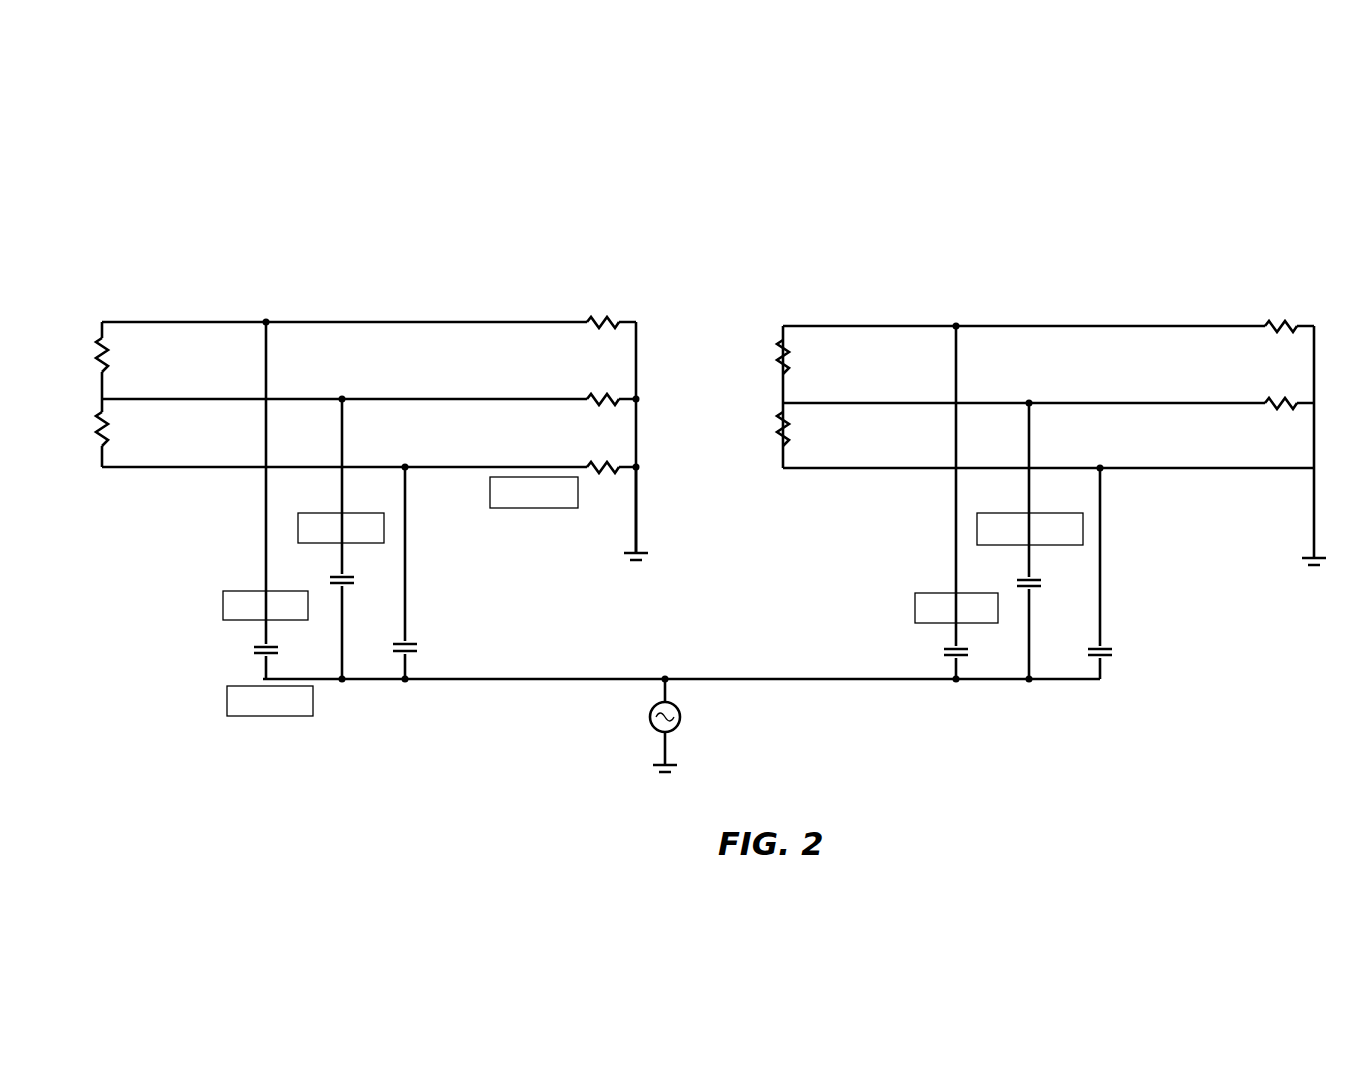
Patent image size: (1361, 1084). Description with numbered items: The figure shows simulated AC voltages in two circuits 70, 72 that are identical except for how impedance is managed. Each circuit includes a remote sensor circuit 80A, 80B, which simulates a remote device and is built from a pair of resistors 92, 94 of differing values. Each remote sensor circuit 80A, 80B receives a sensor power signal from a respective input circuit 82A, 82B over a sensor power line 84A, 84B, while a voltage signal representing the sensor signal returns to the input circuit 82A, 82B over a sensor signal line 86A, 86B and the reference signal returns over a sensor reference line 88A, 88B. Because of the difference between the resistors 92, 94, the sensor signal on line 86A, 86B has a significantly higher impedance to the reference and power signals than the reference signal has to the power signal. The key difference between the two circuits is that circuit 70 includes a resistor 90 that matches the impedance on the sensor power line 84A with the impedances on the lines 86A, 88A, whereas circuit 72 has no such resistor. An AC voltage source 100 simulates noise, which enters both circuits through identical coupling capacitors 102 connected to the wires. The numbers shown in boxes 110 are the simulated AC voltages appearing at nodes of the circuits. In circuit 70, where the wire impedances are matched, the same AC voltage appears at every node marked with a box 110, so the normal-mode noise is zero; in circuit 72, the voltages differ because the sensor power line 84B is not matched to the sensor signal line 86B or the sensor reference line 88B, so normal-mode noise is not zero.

The circuit 70 is at (378, 185).
The circuit 72 is at (1119, 188).
The remote sensor circuit 80A is at (100, 307).
The remote sensor circuit 80B is at (775, 312).
The input circuit 82A is at (608, 252).
The input circuit 82B is at (1285, 253).
The sensor power line 84A is at (184, 468).
The sensor power line 84B is at (1208, 470).
The sensor signal line 86A is at (203, 320).
The sensor signal line 86B is at (1033, 325).
The sensor reference line 88A is at (204, 401).
The sensor reference line 88B is at (888, 405).
The resistor 90 is at (638, 469).
The resistor 92 is at (110, 356).
The resistor 94 is at (110, 432).
The AC voltage source 100 is at (676, 724).
The coupling capacitor 102 is at (256, 648).
The box 110 is at (232, 590).